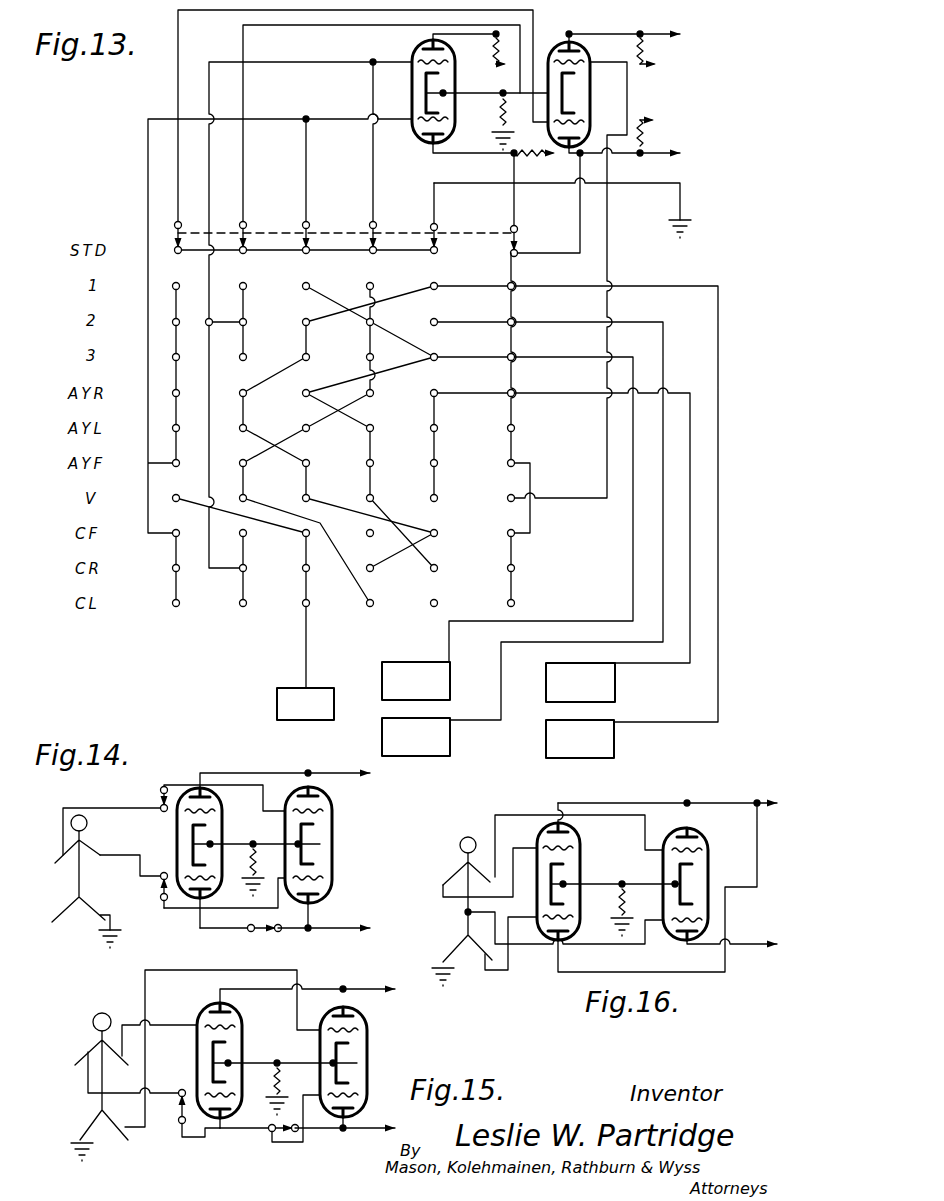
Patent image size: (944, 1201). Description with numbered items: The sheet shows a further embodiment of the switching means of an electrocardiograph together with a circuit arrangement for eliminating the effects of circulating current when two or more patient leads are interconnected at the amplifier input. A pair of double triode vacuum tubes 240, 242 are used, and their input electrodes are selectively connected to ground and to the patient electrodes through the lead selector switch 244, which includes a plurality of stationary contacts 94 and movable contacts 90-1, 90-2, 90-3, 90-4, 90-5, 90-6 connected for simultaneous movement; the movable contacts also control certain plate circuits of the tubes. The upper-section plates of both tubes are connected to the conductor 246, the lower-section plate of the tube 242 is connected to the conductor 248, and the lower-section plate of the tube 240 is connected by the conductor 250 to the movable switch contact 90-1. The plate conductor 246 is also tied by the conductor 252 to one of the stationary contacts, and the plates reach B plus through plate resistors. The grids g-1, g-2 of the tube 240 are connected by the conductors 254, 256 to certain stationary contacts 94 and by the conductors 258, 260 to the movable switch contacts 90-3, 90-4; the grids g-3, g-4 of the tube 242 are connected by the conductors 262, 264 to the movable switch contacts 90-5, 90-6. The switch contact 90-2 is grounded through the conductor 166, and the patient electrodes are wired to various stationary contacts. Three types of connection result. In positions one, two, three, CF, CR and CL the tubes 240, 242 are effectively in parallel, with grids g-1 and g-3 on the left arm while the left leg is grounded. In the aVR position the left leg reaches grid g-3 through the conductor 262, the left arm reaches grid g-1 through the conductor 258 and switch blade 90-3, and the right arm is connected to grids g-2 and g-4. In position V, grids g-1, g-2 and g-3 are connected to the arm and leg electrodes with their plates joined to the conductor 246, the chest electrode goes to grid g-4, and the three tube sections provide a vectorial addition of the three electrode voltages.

In FIG. 13, the stationary contacts 94 is at (176, 320).
In FIG. 16, the stationary contacts 94 is at (708, 920).
In FIG. 13, the conductor 166 is at (660, 183).
In FIG. 13, the vacuum tube 240 is at (455, 80).
In FIG. 14, the vacuum tube 240 is at (177, 848).
In FIG. 15, the vacuum tube 240 is at (296, 1056).
In FIG. 13, the vacuum tube 242 is at (600, 80).
In FIG. 14, the vacuum tube 242 is at (333, 845).
In FIG. 15, the vacuum tube 242 is at (319, 1074).
In FIG. 13, the lead selector switch 244 is at (340, 203).
In FIG. 13, the conductor 246 is at (680, 36).
In FIG. 14, the conductor 246 is at (340, 764).
In FIG. 15, the conductor 246 is at (370, 990).
In FIG. 16, the conductor 246 is at (643, 808).
In FIG. 13, the conductor 248 is at (678, 151).
In FIG. 14, the conductor 248 is at (342, 931).
In FIG. 15, the conductor 248 is at (380, 1142).
In FIG. 16, the conductor 248 is at (750, 952).
In FIG. 13, the conductor 250 is at (460, 152).
In FIG. 14, the conductor 250 is at (215, 930).
In FIG. 15, the conductor 250 is at (232, 1131).
In FIG. 13, the conductor 252 is at (609, 248).
In FIG. 13, the conductor 254 is at (310, 57).
In FIG. 14, the conductor 254 is at (100, 808).
In FIG. 13, the conductor 256 is at (290, 108).
In FIG. 14, the conductor 256 is at (122, 866).
In FIG. 13, the conductor 258 is at (370, 96).
In FIG. 15, the conductor 258 is at (175, 1024).
In FIG. 13, the conductor 260 is at (308, 165).
In FIG. 13, the conductor 262 is at (243, 33).
In FIG. 14, the conductor 262 is at (222, 784).
In FIG. 15, the conductor 262 is at (212, 972).
In FIG. 13, the conductor 264 is at (178, 60).
In FIG. 14, the conductor 264 is at (237, 912).
In FIG. 13, the movable switch contact 90-1 is at (516, 228).
In FIG. 14, the movable switch contact 90-1 is at (265, 932).
In FIG. 15, the movable switch contact 90-1 is at (282, 1134).
In FIG. 13, the movable switch contact 90-2 is at (437, 226).
In FIG. 13, the movable switch contact 90-3 is at (375, 226).
In FIG. 13, the movable switch contact 90-4 is at (309, 226).
In FIG. 13, the movable switch contact 90-5 is at (246, 226).
In FIG. 14, the movable switch contact 90-5 is at (161, 790).
In FIG. 13, the movable switch contact 90-6 is at (166, 238).
In FIG. 14, the movable switch contact 90-6 is at (160, 885).
In FIG. 15, the movable switch contact 90-6 is at (178, 1105).
In FIG. 13, the grid g-1 is at (462, 52).
In FIG. 14, the grid g-1 is at (222, 811).
In FIG. 15, the grid g-1 is at (242, 1027).
In FIG. 16, the grid g-1 is at (580, 848).
In FIG. 13, the grid g-2 is at (466, 112).
In FIG. 14, the grid g-2 is at (215, 880).
In FIG. 15, the grid g-2 is at (235, 1091).
In FIG. 16, the grid g-2 is at (575, 917).
In FIG. 13, the grid g-3 is at (590, 62).
In FIG. 14, the grid g-3 is at (333, 811).
In FIG. 15, the grid g-3 is at (367, 1030).
In FIG. 16, the grid g-3 is at (708, 850).
In FIG. 13, the grid g-4 is at (597, 118).
In FIG. 14, the grid g-4 is at (333, 878).
In FIG. 15, the grid g-4 is at (367, 1095).